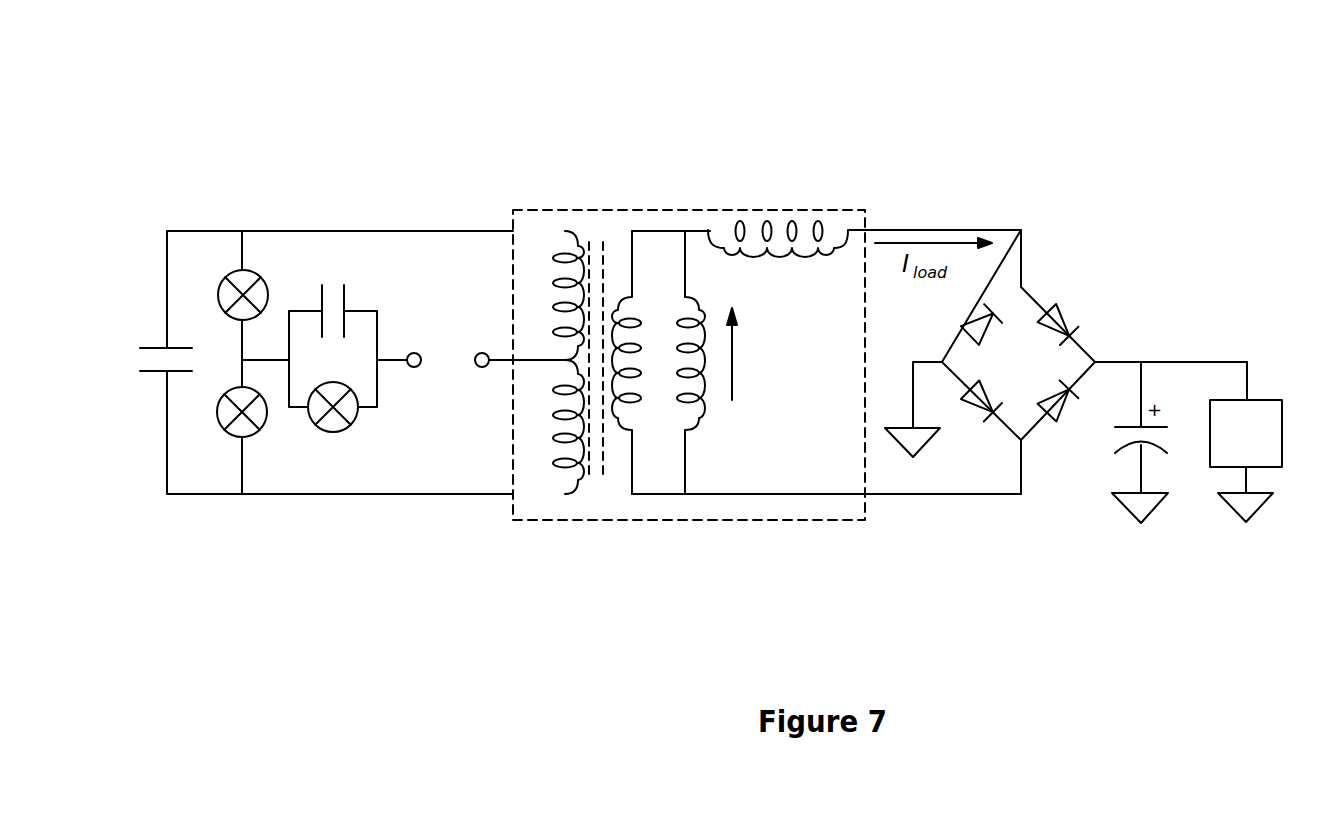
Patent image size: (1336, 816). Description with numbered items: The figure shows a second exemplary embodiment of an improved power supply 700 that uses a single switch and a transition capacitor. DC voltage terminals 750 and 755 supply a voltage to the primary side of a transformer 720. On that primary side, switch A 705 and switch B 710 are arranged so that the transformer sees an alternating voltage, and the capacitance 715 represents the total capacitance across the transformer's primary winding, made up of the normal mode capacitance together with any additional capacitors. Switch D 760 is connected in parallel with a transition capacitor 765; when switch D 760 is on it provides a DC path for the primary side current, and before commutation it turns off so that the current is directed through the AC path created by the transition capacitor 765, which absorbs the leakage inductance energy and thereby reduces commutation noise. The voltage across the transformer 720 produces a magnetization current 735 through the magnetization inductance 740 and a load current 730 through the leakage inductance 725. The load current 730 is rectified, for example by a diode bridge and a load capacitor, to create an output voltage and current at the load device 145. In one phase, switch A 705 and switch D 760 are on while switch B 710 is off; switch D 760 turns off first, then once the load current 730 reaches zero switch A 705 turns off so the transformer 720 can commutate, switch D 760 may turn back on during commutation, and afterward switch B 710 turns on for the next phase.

The power supply 700 is at (775, 72).
The switch A 705 is at (217, 282).
The switch B 710 is at (218, 437).
The capacitance Cc 715 is at (135, 335).
The transformer 720 is at (627, 203).
The leakage inductance 725 is at (807, 223).
The load current 730 is at (945, 240).
The magnetization current 735 is at (772, 353).
The magnetization inductance 740 is at (758, 460).
The DC voltage terminal 750 is at (475, 345).
The DC voltage terminal 755 is at (417, 375).
The switch D 760 is at (365, 425).
The transition capacitor Ctd 765 is at (350, 282).
The load device 145 is at (1267, 447).